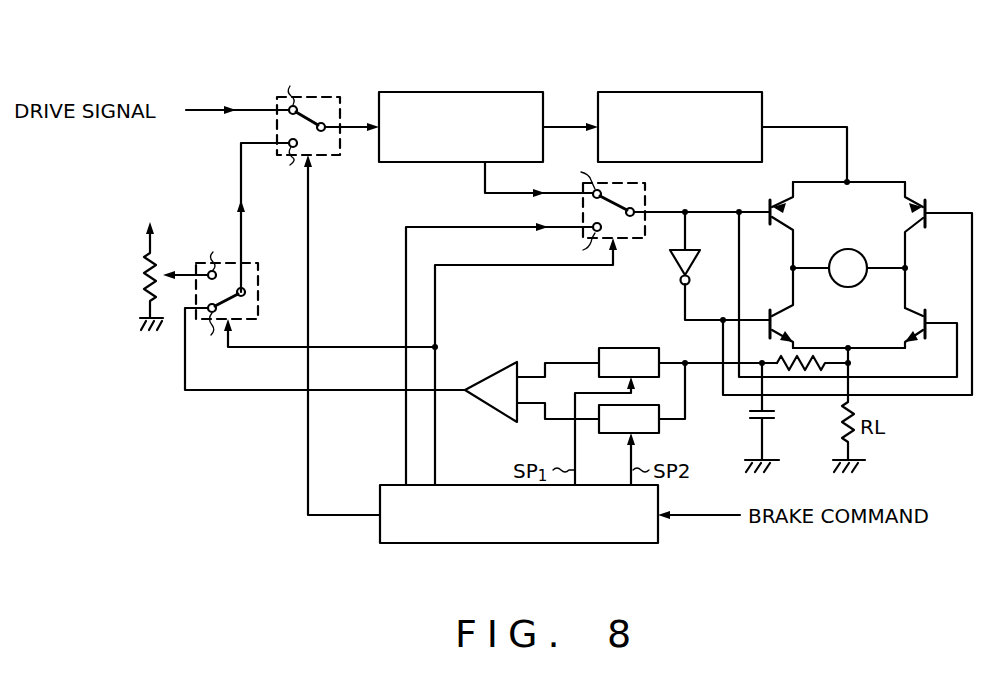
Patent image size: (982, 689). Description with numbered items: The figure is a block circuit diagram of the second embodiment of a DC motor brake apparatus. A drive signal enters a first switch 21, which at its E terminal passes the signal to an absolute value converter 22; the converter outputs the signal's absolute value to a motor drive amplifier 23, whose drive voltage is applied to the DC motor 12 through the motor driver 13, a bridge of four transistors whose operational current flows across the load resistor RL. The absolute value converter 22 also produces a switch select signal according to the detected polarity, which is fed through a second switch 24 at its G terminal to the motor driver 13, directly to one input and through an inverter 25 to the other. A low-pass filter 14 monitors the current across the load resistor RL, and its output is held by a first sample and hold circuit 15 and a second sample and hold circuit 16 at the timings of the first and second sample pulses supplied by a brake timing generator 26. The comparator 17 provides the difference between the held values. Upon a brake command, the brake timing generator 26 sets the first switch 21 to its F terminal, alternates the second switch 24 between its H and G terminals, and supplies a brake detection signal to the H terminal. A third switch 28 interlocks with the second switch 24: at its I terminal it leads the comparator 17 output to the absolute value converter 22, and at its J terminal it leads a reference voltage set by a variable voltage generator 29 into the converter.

The DC motor 12 is at (848, 250).
The motor driver 13 is at (874, 175).
The low-pass filter 14 is at (781, 411).
The first sample and hold circuit 15 is at (638, 348).
The second sample and hold circuit 16 is at (656, 433).
The comparator 17 is at (492, 372).
The first switch 21 is at (330, 97).
The absolute value converter 22 is at (493, 91).
The motor drive amplifier 23 is at (710, 91).
The second switch 24 is at (645, 200).
The inverter 25 is at (678, 265).
The brake timing generator 26 is at (395, 545).
The third switch 28 is at (259, 293).
The variable voltage generator 29 is at (143, 271).